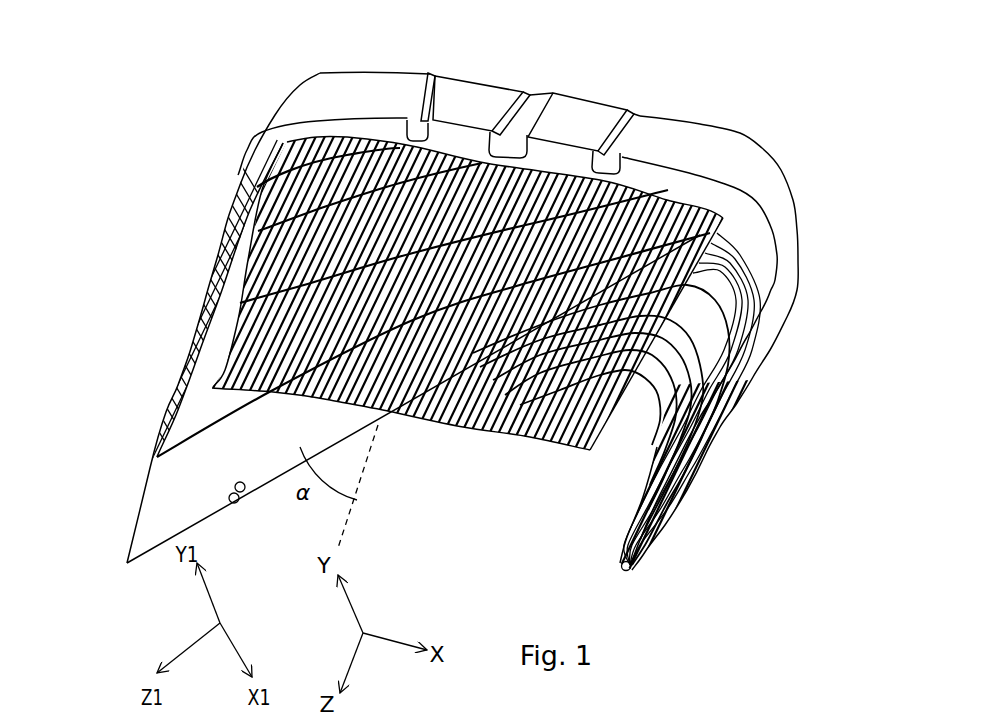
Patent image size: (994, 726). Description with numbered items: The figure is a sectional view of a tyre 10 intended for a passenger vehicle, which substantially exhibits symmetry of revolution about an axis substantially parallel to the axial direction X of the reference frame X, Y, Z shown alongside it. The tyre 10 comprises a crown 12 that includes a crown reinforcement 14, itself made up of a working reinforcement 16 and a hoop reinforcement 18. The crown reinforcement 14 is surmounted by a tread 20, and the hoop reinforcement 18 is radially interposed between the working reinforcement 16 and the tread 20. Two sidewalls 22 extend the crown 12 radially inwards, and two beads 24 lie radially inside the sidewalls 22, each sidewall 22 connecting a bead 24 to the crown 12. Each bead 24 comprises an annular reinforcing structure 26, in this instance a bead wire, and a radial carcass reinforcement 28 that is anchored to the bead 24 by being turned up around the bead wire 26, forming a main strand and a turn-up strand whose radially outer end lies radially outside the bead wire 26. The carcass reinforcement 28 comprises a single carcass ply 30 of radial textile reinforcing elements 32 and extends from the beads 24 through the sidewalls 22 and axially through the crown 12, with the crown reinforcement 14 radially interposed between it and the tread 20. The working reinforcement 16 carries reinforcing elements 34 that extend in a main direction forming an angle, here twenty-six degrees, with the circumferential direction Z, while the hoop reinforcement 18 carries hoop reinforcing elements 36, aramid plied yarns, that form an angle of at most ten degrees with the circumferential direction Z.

The tyre 10 is at (162, 104).
The crown 12 is at (317, 73).
The crown reinforcement 14 is at (243, 285).
The working reinforcement 16 is at (197, 464).
The hoop reinforcement 18 is at (430, 437).
The tread 20 is at (567, 107).
The sidewalls 22 is at (788, 290).
The beads 24 is at (657, 567).
The annular reinforcing structure 26 is at (621, 572).
The radial carcass reinforcement 28 is at (731, 272).
The carcass ply 30 is at (722, 328).
The radial textile reinforcing elements 32 is at (640, 402).
The reinforcing elements 34 is at (167, 411).
The hoop reinforcing elements 36 is at (523, 432).